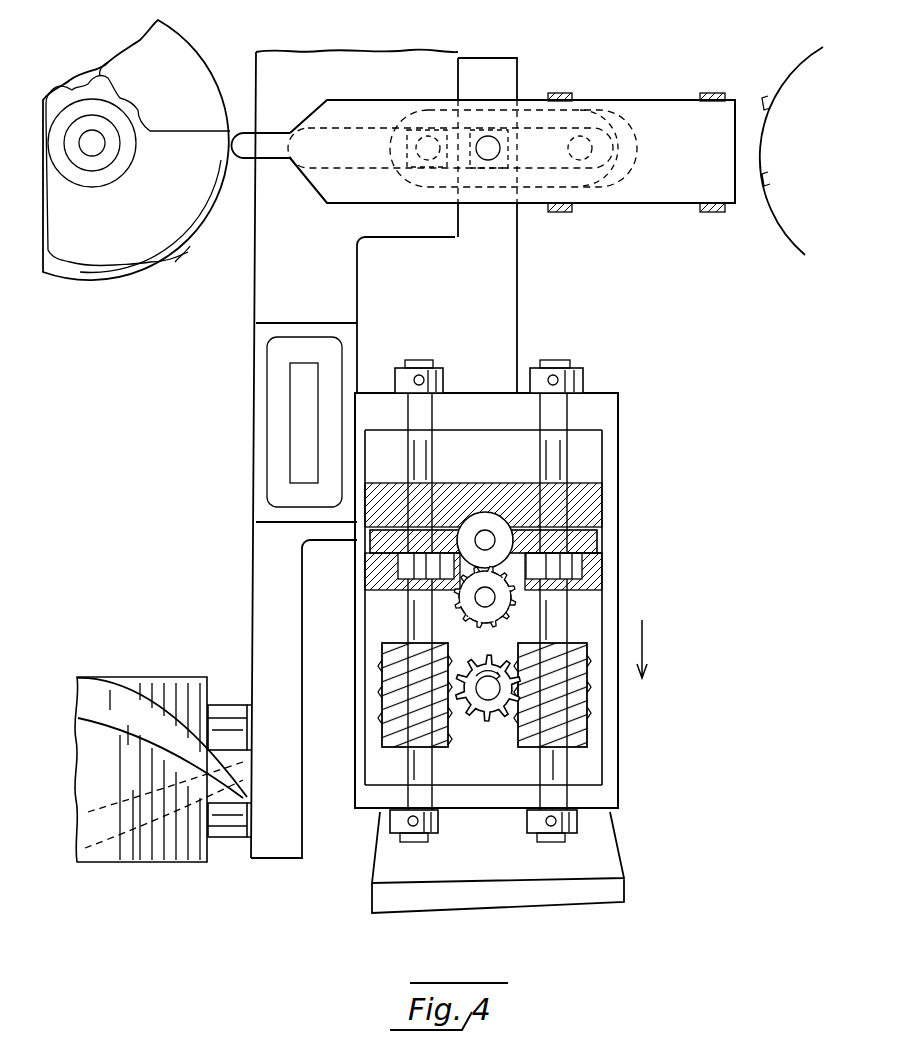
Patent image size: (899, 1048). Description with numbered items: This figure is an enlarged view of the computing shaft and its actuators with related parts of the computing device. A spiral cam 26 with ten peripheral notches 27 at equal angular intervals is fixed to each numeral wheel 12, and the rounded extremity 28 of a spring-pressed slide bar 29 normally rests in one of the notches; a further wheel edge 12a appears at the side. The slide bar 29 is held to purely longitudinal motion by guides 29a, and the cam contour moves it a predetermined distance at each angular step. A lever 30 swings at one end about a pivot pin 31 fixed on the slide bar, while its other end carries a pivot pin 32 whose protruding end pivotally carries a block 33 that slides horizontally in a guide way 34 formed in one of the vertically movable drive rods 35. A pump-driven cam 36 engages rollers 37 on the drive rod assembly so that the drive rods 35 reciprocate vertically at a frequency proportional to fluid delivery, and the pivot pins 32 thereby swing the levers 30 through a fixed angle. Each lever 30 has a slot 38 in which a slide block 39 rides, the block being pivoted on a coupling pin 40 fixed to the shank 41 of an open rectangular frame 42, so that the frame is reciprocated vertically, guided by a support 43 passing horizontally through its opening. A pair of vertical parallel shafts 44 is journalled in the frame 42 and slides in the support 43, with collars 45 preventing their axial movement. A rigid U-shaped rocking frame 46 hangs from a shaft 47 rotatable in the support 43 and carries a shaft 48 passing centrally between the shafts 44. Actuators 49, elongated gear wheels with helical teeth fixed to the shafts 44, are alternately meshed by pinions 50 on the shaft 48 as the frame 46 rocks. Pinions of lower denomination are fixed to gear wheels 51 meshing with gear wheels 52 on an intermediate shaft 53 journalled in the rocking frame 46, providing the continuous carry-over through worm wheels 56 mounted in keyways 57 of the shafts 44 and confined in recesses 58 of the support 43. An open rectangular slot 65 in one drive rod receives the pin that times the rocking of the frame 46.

The numeral wheel 12 is at (190, 97).
The second disc edge 12a is at (800, 258).
The spiral cam 26 is at (166, 211).
The peripheral notches 27 is at (108, 76).
The rounded extremity 28 is at (240, 166).
The slide bar 29 is at (700, 180).
The guides 29a is at (718, 93).
The lever 30 is at (586, 108).
The pivot pin 31 is at (626, 132).
The pivot pin 32 is at (430, 134).
The block 33 is at (407, 150).
The guide way 34 is at (374, 170).
The drive rods 35 is at (256, 280).
The cam 36 is at (150, 696).
The rollers 37 is at (230, 705).
The slot 38 is at (586, 136).
The slide block 39 is at (508, 149).
The coupling pin 40 is at (488, 160).
The shank 41 is at (517, 288).
The open rectangular frame 42 is at (604, 603).
The support 43 is at (448, 500).
The vertical parallel shafts 44 is at (410, 447).
The collars 45 is at (396, 378).
The rocking frame 46 is at (484, 902).
The shaft 47 is at (488, 536).
The shaft 48 is at (480, 719).
The actuators 49 is at (386, 670).
The pinions 50 is at (492, 740).
The gear wheels 51 is at (508, 612).
The gear wheels 52 is at (468, 616).
The intermediate shaft 53 is at (478, 597).
The worm wheels 56 is at (372, 548).
The keyways 57 is at (402, 492).
The recesses 58 is at (604, 516).
The open rectangular slot 65 is at (308, 338).